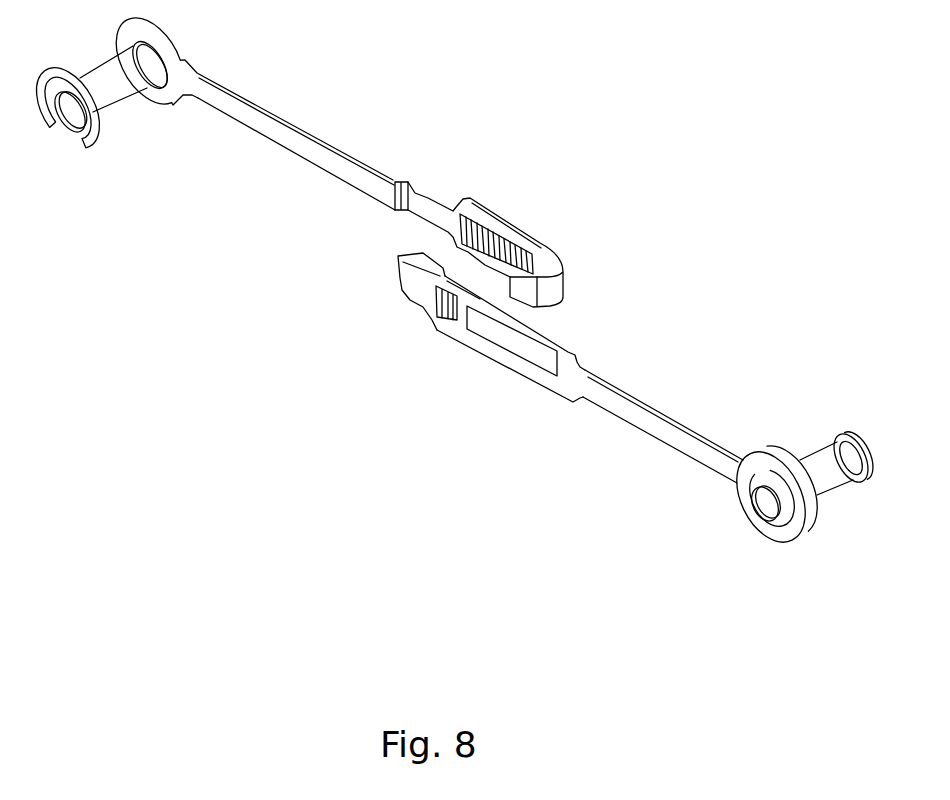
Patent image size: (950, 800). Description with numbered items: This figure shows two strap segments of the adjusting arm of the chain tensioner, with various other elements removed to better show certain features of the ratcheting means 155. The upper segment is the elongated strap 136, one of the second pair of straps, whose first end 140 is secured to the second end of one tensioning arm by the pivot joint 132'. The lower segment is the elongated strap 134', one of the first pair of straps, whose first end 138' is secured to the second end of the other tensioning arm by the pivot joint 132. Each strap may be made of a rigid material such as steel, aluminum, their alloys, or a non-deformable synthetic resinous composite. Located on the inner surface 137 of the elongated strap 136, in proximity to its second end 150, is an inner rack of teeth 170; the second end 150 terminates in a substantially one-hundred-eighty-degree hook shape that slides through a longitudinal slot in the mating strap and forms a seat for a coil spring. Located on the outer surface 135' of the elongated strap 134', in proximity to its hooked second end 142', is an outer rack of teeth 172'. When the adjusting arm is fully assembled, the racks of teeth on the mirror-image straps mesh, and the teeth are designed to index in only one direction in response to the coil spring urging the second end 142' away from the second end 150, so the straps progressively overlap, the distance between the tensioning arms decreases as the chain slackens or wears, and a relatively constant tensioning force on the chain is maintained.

The pivot joint 132 is at (743, 529).
The pivot joint 132' is at (68, 146).
The elongated strap 134' is at (663, 449).
The outer surface 135' is at (511, 390).
The elongated strap 136 is at (293, 122).
The inner surface 137 is at (317, 157).
The first end 138' is at (799, 508).
The first end 140 is at (183, 42).
The second end 142' is at (391, 297).
The second end 150 is at (547, 297).
The ratcheting means 155 is at (461, 294).
The inner rack of teeth 170 is at (457, 238).
The outer rack of teeth 172' is at (417, 344).